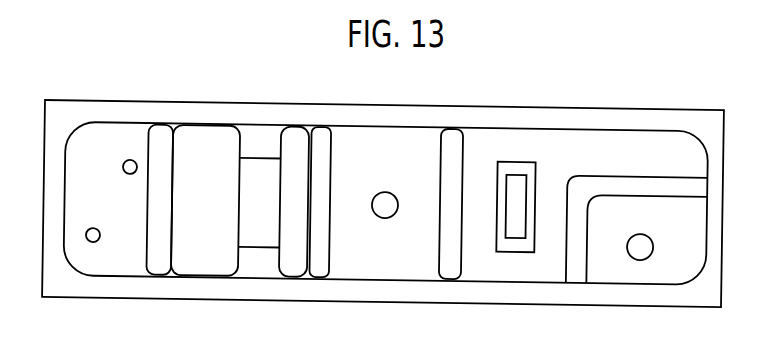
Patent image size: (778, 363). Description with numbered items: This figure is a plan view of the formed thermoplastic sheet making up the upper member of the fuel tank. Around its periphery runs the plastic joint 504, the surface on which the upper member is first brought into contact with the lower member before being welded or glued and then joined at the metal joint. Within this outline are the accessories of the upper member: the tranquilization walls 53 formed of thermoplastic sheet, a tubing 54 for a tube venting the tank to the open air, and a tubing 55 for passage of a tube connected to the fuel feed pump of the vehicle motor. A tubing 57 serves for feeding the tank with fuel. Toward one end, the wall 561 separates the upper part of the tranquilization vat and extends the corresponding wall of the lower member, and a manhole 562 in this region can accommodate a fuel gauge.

The plastic joint 504 is at (60, 115).
The tranquilization walls 53 is at (258, 138).
The tubing 54 is at (124, 163).
The tubing 55 is at (95, 230).
The tubing 57 is at (386, 198).
The wall 561 is at (520, 192).
The manhole 562 is at (643, 237).